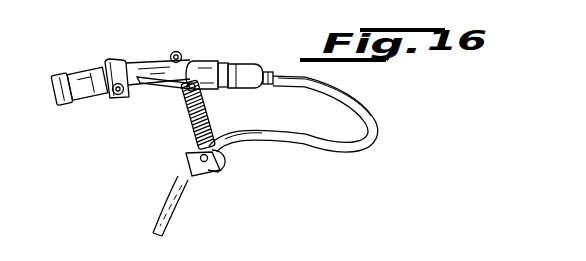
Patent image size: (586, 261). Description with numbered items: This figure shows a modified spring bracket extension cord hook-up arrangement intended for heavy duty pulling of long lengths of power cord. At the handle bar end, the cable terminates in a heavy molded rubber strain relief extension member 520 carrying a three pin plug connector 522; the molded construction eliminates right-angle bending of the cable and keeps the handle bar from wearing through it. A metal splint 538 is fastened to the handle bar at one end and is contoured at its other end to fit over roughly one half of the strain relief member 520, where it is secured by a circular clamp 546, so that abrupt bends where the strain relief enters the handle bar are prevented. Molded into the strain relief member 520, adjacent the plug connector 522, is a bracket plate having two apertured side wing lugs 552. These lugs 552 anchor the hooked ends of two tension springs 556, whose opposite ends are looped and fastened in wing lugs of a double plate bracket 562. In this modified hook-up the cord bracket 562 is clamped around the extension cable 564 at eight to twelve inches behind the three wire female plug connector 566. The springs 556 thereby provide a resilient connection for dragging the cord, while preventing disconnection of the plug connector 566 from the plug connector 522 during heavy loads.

The strain relief extension member 520 is at (150, 62).
The three pin plug connector 522 is at (207, 67).
The metal splint 538 is at (83, 95).
The circular clamp 546 is at (108, 66).
The side wing lugs 552 is at (179, 54).
The tension springs 556 is at (211, 118).
The double plate bracket 562 is at (197, 177).
The extension cable 564 is at (318, 143).
The three wire female plug connector 566 is at (248, 73).